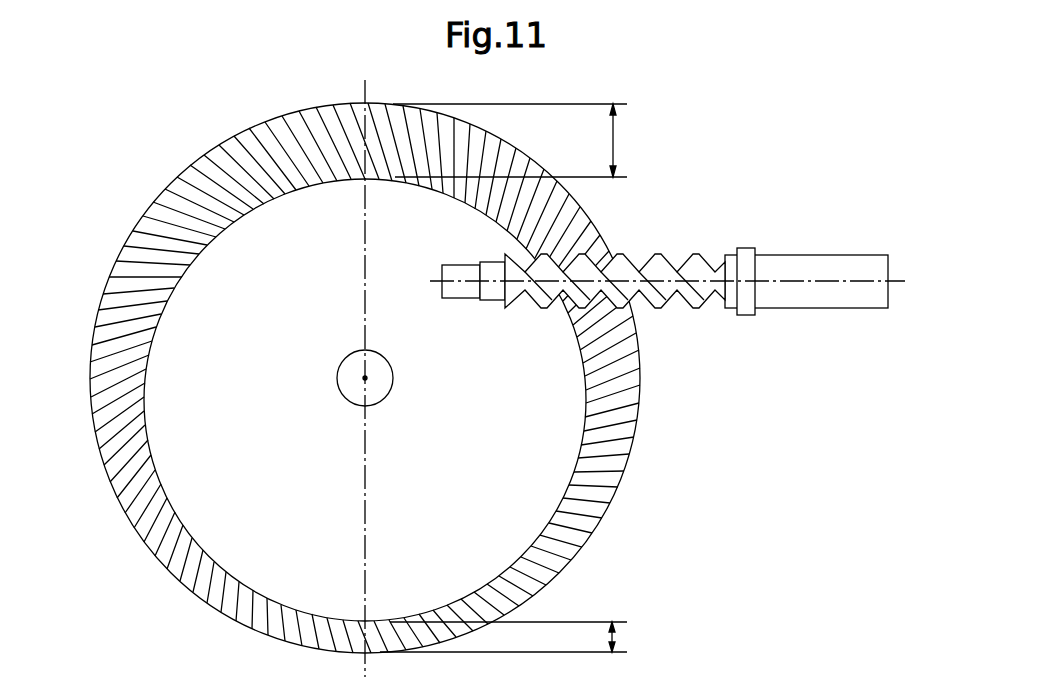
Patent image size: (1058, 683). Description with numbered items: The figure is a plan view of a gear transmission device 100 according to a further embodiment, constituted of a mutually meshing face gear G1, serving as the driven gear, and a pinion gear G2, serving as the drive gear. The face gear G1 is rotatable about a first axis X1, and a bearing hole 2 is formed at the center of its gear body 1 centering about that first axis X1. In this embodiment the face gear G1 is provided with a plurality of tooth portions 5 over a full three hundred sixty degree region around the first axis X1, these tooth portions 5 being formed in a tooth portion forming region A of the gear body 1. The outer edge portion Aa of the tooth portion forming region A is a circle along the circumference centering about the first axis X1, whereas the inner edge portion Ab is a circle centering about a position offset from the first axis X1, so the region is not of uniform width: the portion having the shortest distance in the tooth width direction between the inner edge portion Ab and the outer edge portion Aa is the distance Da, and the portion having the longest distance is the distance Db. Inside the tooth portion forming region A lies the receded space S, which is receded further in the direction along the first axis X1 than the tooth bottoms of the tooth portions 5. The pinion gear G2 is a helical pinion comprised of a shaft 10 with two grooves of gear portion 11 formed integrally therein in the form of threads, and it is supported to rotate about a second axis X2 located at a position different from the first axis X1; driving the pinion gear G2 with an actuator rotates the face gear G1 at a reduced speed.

The gear transmission device 100 is at (695, 147).
The face gear G1 is at (137, 207).
The pinion gear G2 is at (668, 243).
The gear body 1 is at (555, 435).
The bearing hole 2 is at (345, 375).
The tooth portions 5 is at (225, 150).
The shaft 10 is at (807, 265).
The gear portion 11 is at (541, 306).
The tooth portion forming region A is at (600, 523).
The outer edge portion Aa is at (192, 590).
The inner edge portion Ab is at (232, 577).
The receded space S is at (462, 508).
The first axis X1 is at (367, 378).
The second axis X2 is at (683, 284).
The distance Da is at (521, 140).
The distance Db is at (516, 637).